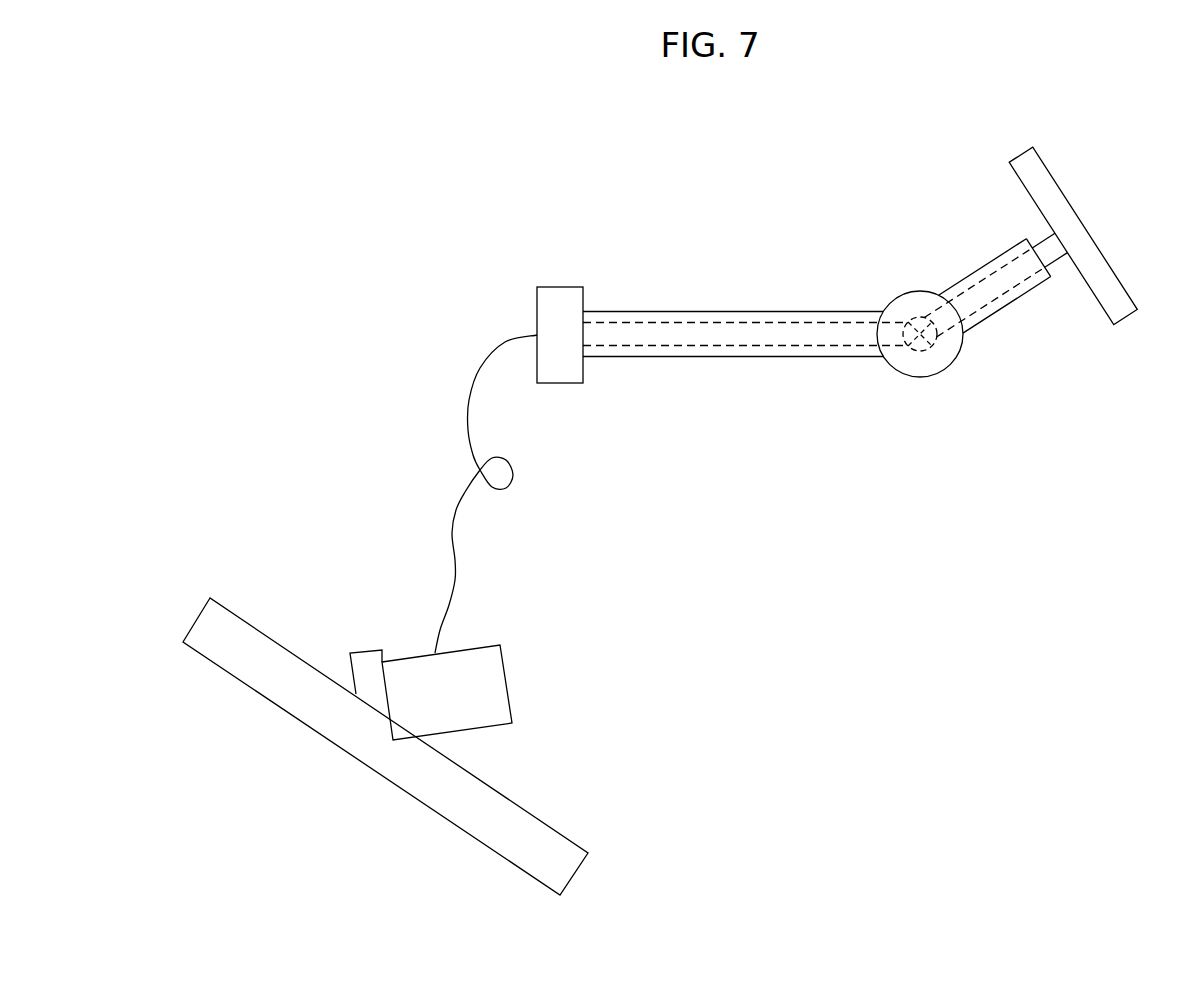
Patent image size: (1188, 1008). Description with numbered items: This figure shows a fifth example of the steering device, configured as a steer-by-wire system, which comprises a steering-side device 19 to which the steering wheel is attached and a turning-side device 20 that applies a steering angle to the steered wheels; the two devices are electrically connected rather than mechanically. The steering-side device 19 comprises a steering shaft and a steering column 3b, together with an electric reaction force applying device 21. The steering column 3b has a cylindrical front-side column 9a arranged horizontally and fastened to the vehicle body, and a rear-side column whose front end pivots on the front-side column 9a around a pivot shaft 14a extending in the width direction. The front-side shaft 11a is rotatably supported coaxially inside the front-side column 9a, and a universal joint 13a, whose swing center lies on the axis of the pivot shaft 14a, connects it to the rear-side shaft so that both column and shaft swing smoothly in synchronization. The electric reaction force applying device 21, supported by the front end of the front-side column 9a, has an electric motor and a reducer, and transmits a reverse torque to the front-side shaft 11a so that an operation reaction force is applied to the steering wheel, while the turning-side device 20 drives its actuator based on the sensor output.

The steering column 3b is at (777, 327).
The front-side column 9a is at (667, 327).
The front-side shaft 11a is at (723, 346).
The universal joint 13a is at (915, 356).
The pivot shaft 14a is at (932, 300).
The steering-side device 19 is at (843, 270).
The turning-side device 20 is at (330, 760).
The electric reaction force applying device 21 is at (555, 308).